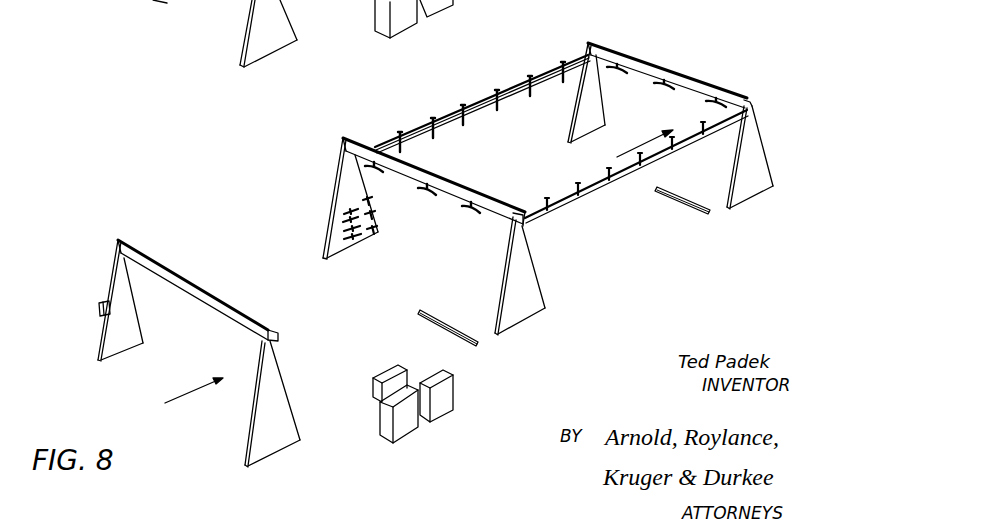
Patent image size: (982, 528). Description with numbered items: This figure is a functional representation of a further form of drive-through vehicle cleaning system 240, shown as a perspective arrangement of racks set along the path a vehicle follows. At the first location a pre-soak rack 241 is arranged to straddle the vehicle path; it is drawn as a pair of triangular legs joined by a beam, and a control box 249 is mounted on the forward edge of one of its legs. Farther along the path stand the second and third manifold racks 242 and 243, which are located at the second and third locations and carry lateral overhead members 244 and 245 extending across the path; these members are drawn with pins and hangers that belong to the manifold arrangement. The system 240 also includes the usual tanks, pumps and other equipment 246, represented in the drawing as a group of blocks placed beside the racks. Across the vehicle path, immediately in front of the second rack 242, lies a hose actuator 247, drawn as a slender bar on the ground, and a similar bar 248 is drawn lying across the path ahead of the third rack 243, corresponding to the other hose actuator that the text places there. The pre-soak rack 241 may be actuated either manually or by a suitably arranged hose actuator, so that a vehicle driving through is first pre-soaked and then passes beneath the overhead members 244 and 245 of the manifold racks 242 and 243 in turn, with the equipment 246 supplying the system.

The vehicle cleaning system 240 is at (290, 211).
The pre-soak rack 241 is at (296, 392).
The second manifold rack 242 is at (536, 272).
The third manifold rack 243 is at (763, 148).
The lateral overhead member 244 is at (452, 113).
The lateral overhead member 245 is at (598, 189).
The tanks, pumps and other equipment 246 is at (451, 404).
The hose actuator 247 is at (455, 322).
The bar 248 is at (689, 200).
The control box 249 is at (104, 303).